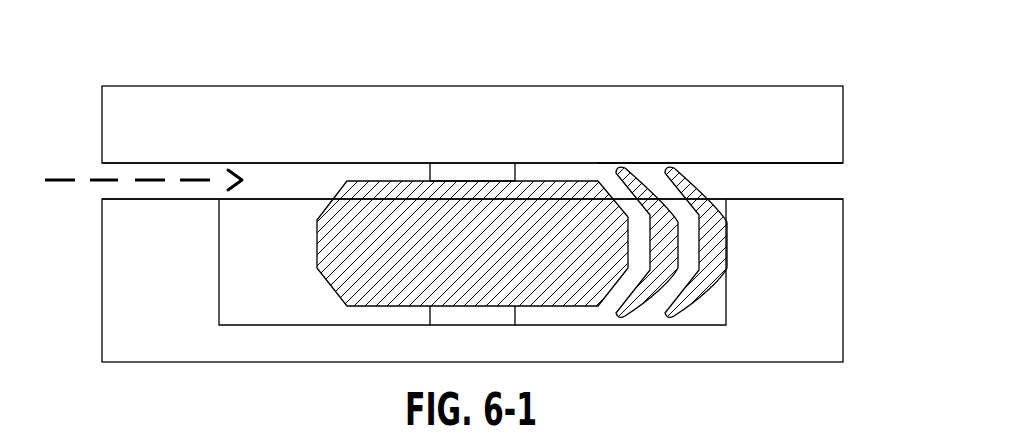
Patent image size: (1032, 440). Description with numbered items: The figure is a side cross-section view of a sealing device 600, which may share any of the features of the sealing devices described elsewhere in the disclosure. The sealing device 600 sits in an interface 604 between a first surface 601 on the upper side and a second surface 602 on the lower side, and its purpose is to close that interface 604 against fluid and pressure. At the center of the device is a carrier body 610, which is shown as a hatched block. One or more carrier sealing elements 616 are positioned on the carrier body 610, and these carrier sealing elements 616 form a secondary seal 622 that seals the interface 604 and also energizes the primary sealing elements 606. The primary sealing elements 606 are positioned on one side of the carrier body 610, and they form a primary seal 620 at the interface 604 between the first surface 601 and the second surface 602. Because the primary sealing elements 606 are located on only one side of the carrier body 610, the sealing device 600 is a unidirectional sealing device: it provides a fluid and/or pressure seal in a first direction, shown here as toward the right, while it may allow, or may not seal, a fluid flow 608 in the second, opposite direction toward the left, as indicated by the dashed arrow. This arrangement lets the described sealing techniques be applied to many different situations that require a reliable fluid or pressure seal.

The sealing device 600 is at (805, 56).
The first surface 601 is at (795, 130).
The second surface 602 is at (795, 290).
The interface 604 is at (820, 174).
The primary sealing element 606 is at (638, 104).
The fluid flow 608 is at (63, 180).
The carrier body 610 is at (498, 197).
The carrier sealing element 616 is at (455, 168).
The primary seal 620 is at (633, 153).
The secondary seal 622 is at (467, 159).